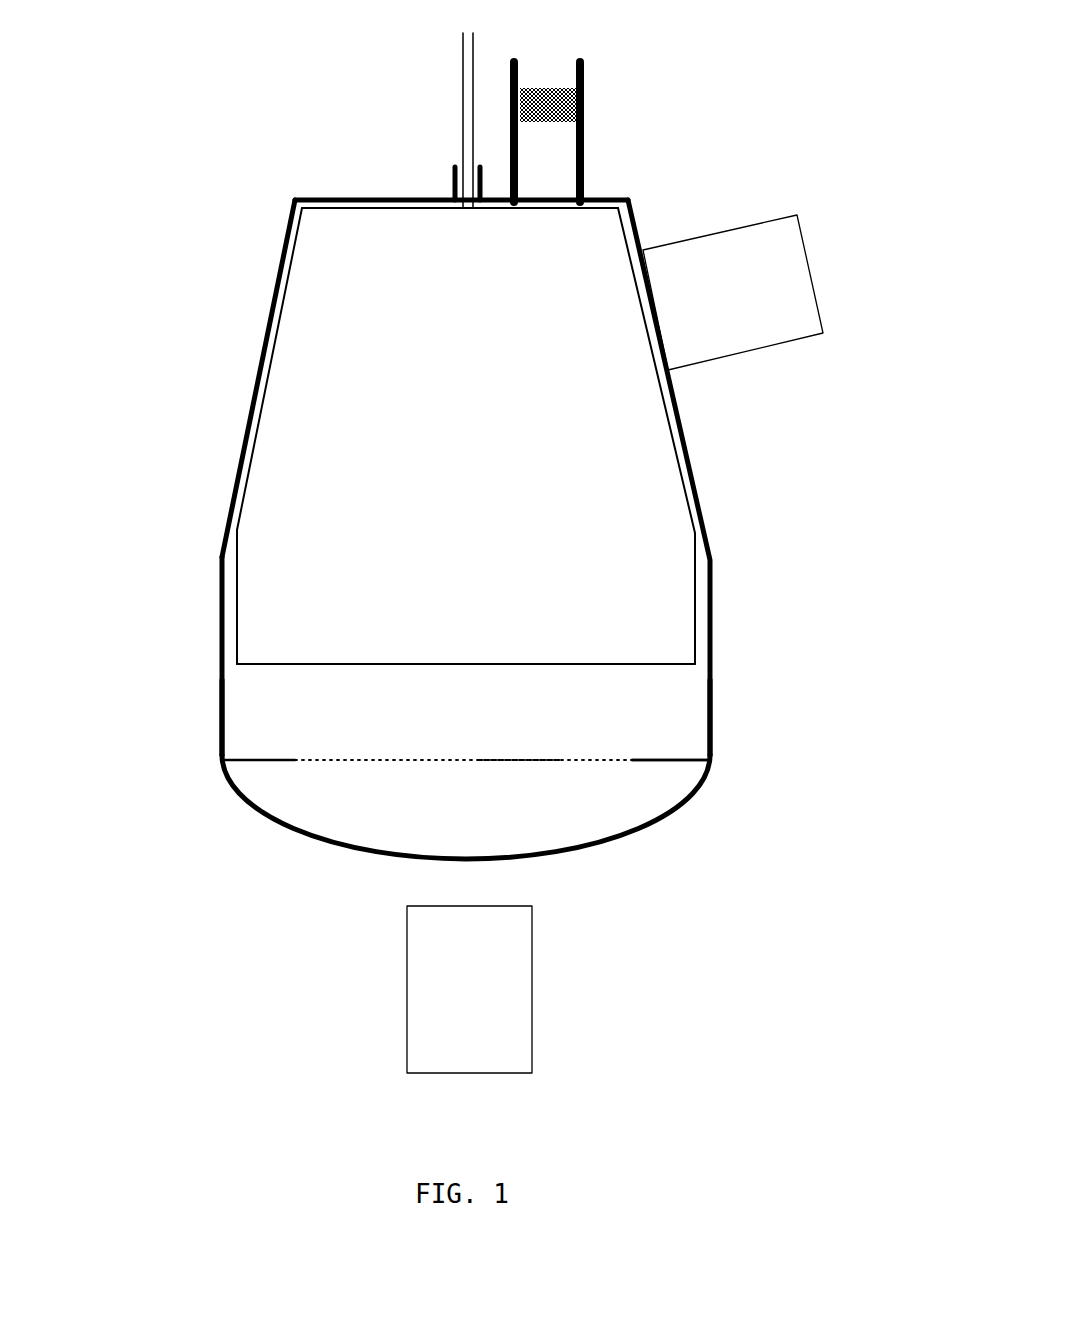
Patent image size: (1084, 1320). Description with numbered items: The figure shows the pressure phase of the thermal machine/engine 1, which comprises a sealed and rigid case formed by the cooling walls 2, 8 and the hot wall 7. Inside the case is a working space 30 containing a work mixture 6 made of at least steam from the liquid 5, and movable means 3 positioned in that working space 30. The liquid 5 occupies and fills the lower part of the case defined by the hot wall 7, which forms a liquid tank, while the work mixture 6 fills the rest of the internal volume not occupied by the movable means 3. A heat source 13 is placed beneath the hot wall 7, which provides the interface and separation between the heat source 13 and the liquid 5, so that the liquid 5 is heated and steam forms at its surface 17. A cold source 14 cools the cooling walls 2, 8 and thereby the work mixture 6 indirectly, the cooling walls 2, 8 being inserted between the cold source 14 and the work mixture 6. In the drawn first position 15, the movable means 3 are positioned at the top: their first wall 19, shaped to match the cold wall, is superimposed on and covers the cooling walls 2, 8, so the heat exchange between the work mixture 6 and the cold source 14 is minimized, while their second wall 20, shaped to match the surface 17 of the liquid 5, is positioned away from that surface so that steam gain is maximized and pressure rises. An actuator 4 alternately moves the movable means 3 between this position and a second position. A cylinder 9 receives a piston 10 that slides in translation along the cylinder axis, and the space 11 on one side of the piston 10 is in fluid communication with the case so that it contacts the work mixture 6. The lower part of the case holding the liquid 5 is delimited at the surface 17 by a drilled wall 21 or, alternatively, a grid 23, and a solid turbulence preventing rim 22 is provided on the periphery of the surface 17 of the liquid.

The thermal machine/engine 1 is at (195, 188).
The cooling wall 2 is at (238, 483).
The movable means 3 is at (237, 613).
The actuator 4 is at (470, 117).
The liquid 5 is at (305, 790).
The work mixture 6 is at (263, 730).
The hot wall 7 is at (337, 845).
The cooling wall 8 is at (690, 468).
The cylinder 9 is at (580, 147).
The piston 10 is at (543, 92).
The space 11 is at (555, 187).
The heat source 13 is at (407, 980).
The cold source 14 is at (770, 347).
The first position 15 is at (466, 558).
The surface of the liquid 17 is at (497, 760).
The first wall 19 is at (265, 392).
The second wall 20 is at (482, 664).
The drilled wall 21 is at (517, 760).
The turbulence preventing rim 22 is at (668, 758).
The grid 23 is at (517, 760).
The working space 30 is at (227, 663).